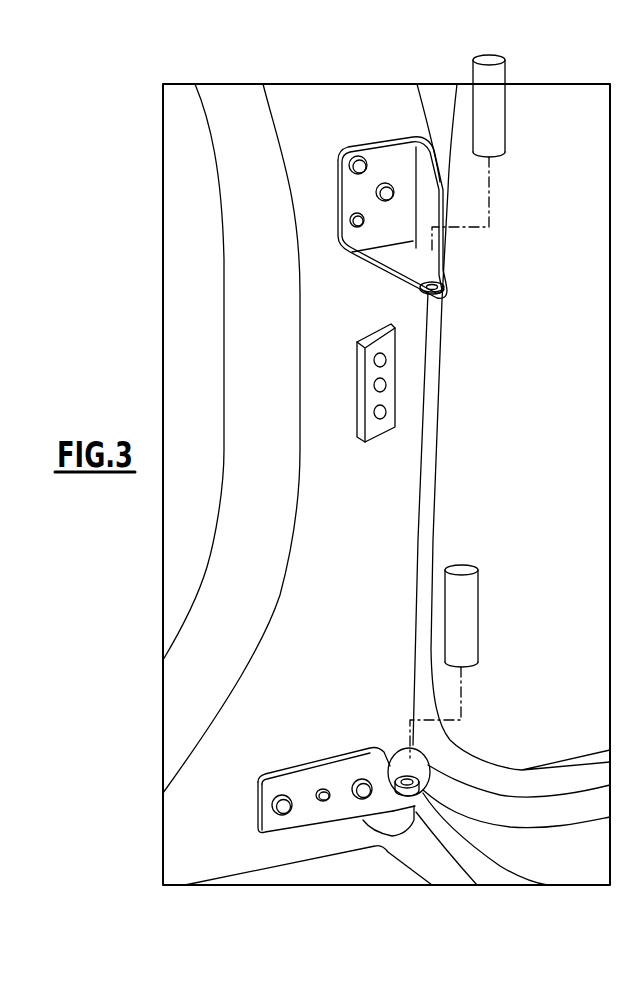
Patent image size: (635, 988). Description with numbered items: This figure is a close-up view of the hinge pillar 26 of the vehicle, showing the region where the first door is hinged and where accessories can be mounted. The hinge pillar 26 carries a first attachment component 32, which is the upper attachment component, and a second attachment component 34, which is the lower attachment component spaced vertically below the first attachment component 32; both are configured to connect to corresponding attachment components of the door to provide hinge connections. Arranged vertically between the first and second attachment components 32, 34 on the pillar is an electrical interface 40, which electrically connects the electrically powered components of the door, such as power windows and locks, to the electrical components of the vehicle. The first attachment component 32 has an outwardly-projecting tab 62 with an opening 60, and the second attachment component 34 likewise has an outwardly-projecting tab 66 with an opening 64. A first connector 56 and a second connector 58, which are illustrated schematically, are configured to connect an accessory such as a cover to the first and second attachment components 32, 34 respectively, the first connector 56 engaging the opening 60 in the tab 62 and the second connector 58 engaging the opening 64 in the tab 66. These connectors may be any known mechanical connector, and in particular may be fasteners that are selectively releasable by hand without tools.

The hinge pillar 26 is at (392, 493).
The first attachment component 32 is at (440, 223).
The second attachment component 34 is at (389, 778).
The electrical interface 40 is at (390, 386).
The first connector 56 is at (495, 110).
The second connector 58 is at (465, 613).
The opening 60 is at (448, 285).
The outwardly-projecting tab 62 is at (412, 268).
The opening 64 is at (418, 790).
The outwardly-projecting tab 66 is at (396, 758).